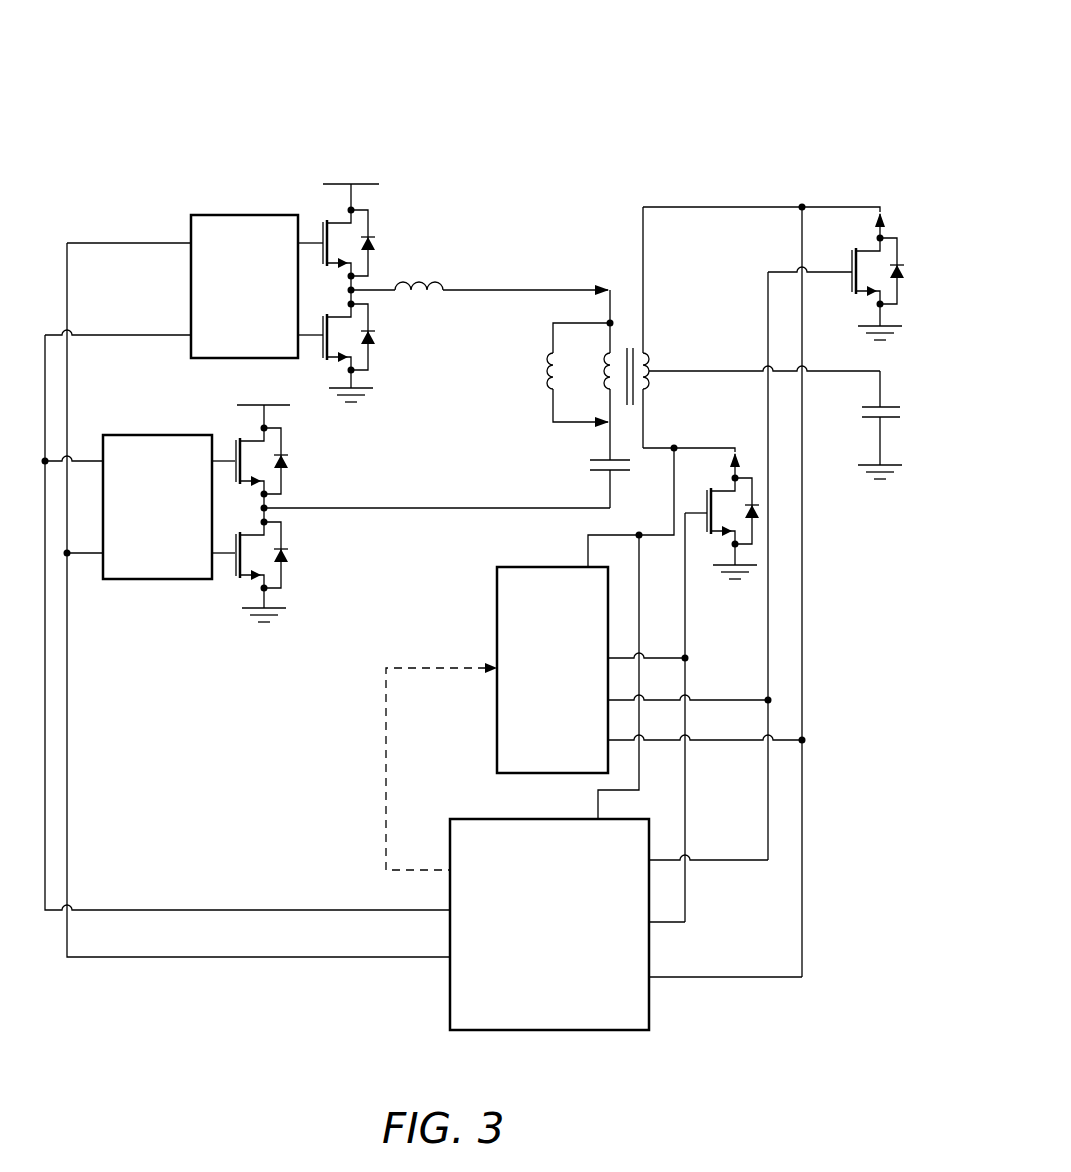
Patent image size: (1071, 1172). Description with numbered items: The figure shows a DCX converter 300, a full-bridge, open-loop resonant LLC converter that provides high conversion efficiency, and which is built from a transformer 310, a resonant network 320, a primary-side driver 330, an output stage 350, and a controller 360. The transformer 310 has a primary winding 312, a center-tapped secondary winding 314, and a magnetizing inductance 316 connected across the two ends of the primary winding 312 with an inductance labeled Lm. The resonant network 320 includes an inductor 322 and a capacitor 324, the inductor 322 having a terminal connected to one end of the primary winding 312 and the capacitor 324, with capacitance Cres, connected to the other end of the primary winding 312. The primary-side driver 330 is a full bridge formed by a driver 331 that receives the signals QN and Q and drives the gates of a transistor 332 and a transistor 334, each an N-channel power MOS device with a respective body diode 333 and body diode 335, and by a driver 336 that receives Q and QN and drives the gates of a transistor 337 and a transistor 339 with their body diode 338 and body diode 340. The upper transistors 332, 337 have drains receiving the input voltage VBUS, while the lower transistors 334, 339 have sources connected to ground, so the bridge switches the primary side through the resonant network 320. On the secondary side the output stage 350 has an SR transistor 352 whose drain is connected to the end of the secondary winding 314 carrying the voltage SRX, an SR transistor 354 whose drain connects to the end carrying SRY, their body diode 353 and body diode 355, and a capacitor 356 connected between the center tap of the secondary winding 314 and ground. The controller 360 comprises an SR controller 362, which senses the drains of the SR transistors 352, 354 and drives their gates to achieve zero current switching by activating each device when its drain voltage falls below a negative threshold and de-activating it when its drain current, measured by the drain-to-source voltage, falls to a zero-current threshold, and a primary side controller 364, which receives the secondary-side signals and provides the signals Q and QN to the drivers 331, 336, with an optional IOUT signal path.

The DCX converter 300 is at (125, 50).
The transformer 310 is at (625, 270).
The primary winding 312 is at (605, 366).
The secondary winding 314 is at (648, 360).
The magnetizing inductance 316 is at (548, 362).
The resonant network 320 is at (445, 314).
The inductor 322 is at (443, 283).
The capacitor 324 is at (600, 470).
The primary-side driver 330 is at (247, 138).
The driver 331 is at (232, 215).
The transistor 332 is at (327, 218).
The body diode 333 is at (372, 245).
The transistor 334 is at (320, 355).
The body diode 335 is at (375, 338).
The driver 336 is at (140, 435).
The transistor 337 is at (238, 440).
The body diode 338 is at (290, 464).
The transistor 339 is at (235, 580).
The body diode 340 is at (283, 560).
The output stage 350 is at (795, 165).
The SR transistor 352 is at (710, 537).
The body diode 353 is at (757, 512).
The SR transistor 354 is at (852, 278).
The body diode 355 is at (899, 275).
The capacitor 356 is at (900, 410).
The controller 360 is at (470, 560).
The SR controller 362 is at (497, 618).
The primary side controller 364 is at (520, 819).